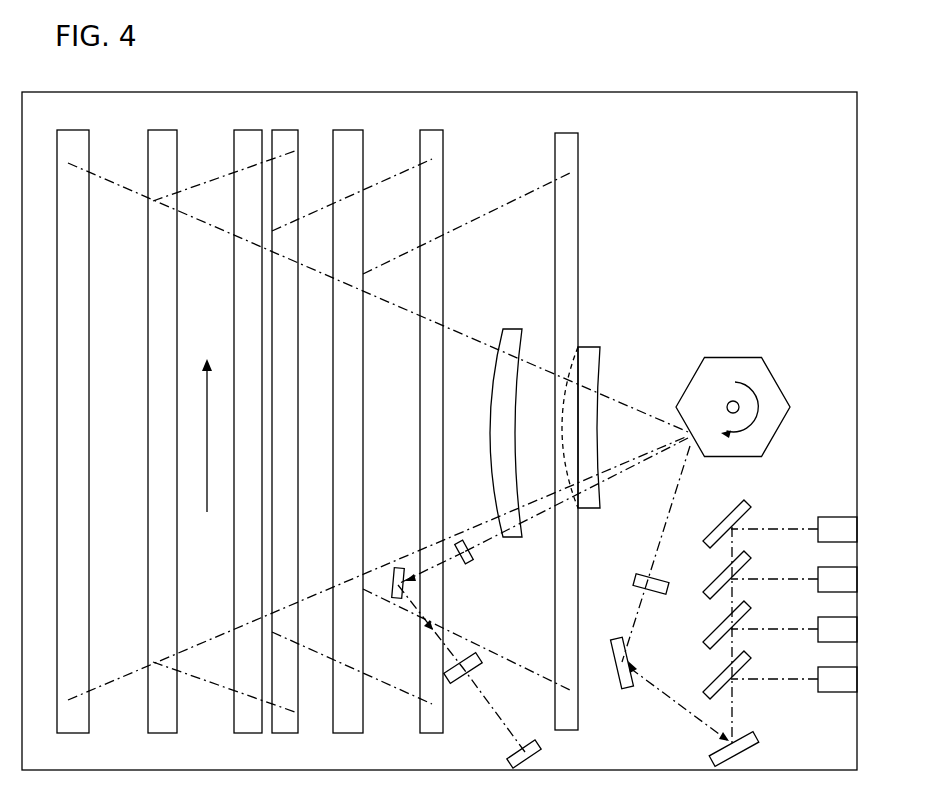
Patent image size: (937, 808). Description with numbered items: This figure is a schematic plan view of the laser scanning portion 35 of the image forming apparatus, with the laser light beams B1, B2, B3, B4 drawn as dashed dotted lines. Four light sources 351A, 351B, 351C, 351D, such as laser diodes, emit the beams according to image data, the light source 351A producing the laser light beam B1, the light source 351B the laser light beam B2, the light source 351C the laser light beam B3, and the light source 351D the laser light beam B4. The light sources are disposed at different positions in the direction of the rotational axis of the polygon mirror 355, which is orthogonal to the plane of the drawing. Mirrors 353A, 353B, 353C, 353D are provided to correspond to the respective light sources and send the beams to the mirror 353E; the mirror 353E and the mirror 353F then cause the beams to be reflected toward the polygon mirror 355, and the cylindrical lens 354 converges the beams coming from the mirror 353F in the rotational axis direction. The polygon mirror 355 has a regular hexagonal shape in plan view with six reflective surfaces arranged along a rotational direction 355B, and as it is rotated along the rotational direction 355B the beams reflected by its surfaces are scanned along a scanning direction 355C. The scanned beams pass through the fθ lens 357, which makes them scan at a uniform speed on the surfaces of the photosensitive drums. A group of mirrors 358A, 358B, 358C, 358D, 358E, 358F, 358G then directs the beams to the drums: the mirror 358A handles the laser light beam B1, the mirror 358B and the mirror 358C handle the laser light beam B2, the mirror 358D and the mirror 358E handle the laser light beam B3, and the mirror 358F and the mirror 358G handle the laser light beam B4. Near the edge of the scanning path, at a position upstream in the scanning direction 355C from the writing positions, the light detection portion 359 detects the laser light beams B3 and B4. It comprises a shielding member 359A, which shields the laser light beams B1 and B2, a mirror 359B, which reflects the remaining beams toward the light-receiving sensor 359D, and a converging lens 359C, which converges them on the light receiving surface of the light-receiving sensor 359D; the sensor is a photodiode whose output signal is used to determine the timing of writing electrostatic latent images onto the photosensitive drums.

The laser scanning portion 35 is at (778, 92).
The light source 351A is at (818, 542).
The light source 351B is at (818, 592).
The light source 351C is at (818, 642).
The light source 351D is at (818, 692).
The mirror 353A is at (747, 503).
The mirror 353B is at (713, 578).
The mirror 353C is at (713, 628).
The mirror 353D is at (713, 678).
The mirror 353E is at (762, 736).
The mirror 353F is at (627, 688).
The cylindrical lens 354 is at (635, 575).
The polygon mirror 355 is at (735, 357).
The rotational direction 355B is at (766, 425).
The scanning direction 355C is at (206, 441).
The fθ lens 357 is at (503, 333).
The mirror 358A is at (73, 130).
The mirror 358B is at (163, 130).
The mirror 358C is at (286, 130).
The mirror 358D is at (248, 130).
The mirror 358E is at (431, 130).
The mirror 358F is at (348, 130).
The mirror 358G is at (566, 133).
The light detection portion 359 is at (508, 634).
The shielding member 359A is at (470, 563).
The mirror 359B is at (392, 600).
The converging lens 359C is at (460, 684).
The light-receiving sensor 359D is at (541, 743).
The laser light beam B1 is at (127, 187).
The laser light beam B2 is at (199, 188).
The laser light beam B3 is at (383, 179).
The laser light beam B4 is at (483, 214).